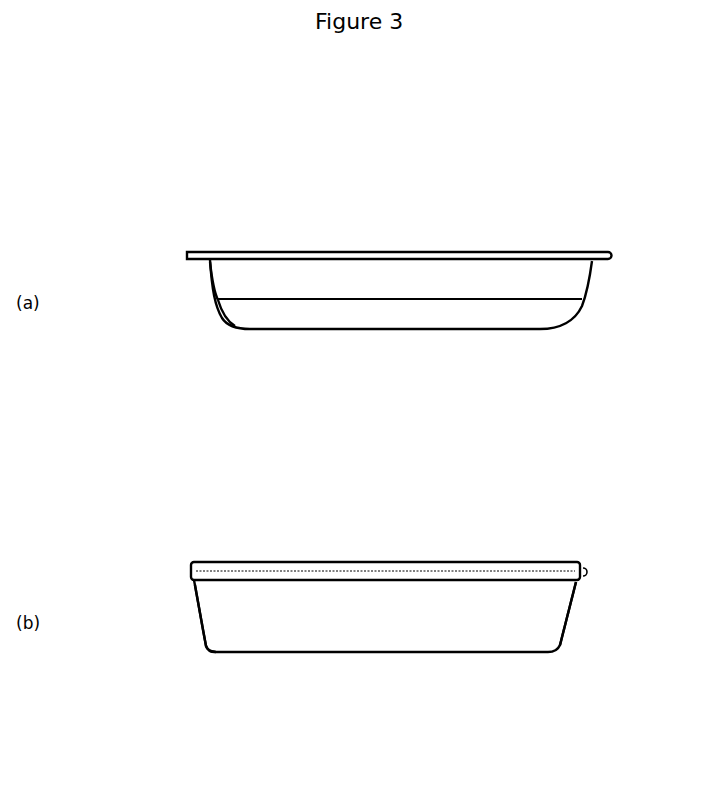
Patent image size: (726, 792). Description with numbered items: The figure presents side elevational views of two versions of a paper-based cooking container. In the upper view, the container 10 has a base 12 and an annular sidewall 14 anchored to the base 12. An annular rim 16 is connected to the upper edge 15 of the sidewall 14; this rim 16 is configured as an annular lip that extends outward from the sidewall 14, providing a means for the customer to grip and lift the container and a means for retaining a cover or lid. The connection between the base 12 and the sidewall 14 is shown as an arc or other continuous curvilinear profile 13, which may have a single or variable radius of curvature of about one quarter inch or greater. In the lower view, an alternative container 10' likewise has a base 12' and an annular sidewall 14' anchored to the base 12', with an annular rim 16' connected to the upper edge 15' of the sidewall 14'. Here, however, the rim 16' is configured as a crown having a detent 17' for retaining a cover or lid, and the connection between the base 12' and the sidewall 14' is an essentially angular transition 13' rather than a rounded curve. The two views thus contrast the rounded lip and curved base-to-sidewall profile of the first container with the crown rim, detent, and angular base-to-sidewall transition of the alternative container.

The paper-based cooking container 10 is at (360, 382).
The base 12 is at (448, 315).
The continuous curvilinear profile 13 is at (186, 336).
The annular sidewall 14 is at (452, 311).
The upper edge 15 is at (178, 281).
The annular rim 16 is at (437, 245).
The paper-based cooking container 10' is at (357, 726).
The base 12' is at (442, 639).
The angular transition 13' is at (177, 661).
The annular sidewall 14' is at (596, 618).
The upper edge 15' is at (170, 617).
The annular rim 16' is at (419, 547).
The detent 17' is at (393, 584).